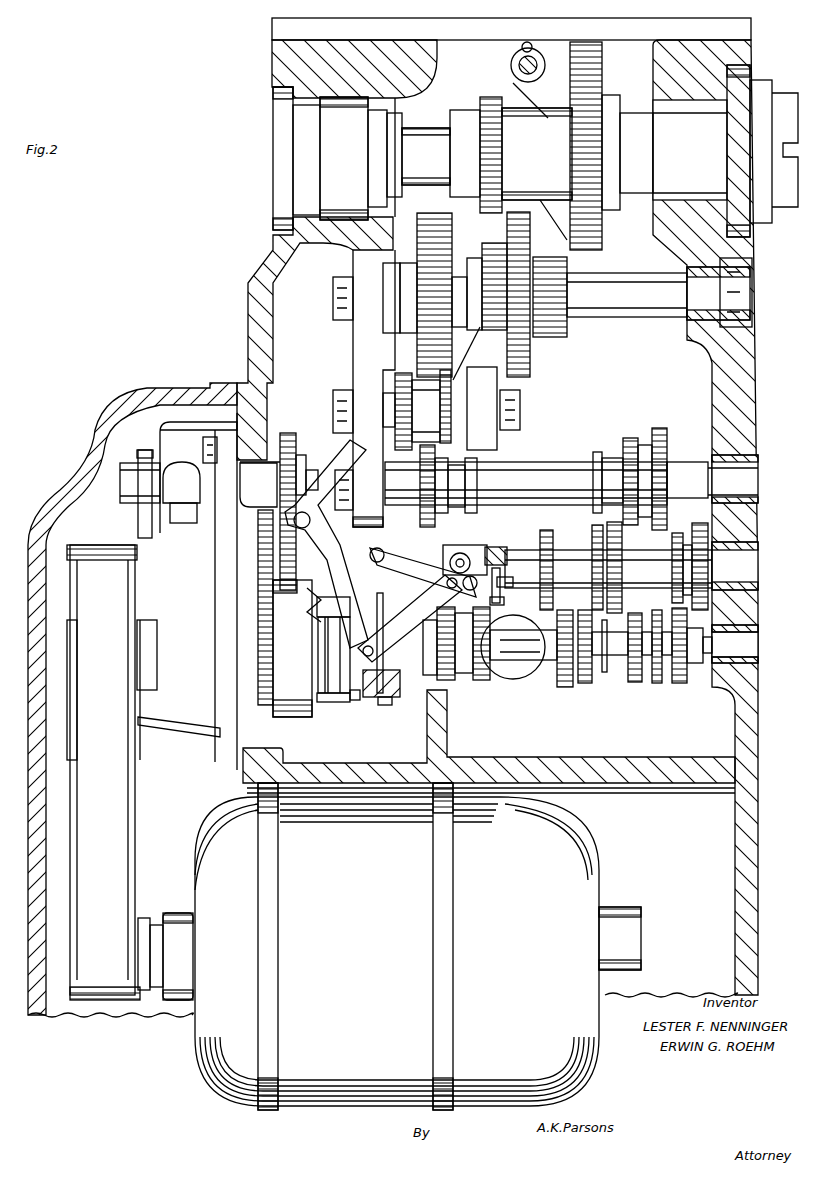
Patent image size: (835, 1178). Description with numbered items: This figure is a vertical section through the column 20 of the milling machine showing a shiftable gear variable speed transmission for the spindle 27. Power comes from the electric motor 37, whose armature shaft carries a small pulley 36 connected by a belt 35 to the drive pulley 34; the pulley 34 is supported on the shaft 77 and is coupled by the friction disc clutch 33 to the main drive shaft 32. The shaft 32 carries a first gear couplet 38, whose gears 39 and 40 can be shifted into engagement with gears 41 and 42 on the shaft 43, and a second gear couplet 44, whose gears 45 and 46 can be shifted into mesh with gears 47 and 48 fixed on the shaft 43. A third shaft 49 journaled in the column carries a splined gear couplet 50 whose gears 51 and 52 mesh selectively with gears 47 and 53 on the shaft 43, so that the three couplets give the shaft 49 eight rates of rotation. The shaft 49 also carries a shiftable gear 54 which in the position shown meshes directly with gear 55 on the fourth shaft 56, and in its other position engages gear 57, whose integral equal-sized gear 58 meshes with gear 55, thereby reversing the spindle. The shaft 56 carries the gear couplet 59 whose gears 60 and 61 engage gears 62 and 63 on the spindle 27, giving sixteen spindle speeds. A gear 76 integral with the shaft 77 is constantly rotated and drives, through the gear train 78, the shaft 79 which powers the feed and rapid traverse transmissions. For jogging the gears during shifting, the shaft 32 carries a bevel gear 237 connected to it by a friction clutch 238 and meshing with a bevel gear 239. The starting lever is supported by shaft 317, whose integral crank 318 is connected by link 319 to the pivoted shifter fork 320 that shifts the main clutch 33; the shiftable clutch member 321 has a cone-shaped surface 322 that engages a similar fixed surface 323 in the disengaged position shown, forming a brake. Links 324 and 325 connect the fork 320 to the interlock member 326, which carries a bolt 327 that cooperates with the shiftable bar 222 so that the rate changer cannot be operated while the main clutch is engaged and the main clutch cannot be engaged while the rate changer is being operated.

The gear housing 20 is at (260, 278).
The spindle 27 is at (757, 100).
The main drive shaft 32 is at (517, 658).
The friction disc clutch 33 is at (302, 690).
The drive pulley 34 is at (60, 548).
The belt 35 is at (123, 800).
The small pulley 36 is at (142, 922).
The electric motor 37 is at (560, 850).
The first gear couplet 38 is at (597, 672).
The gear 39 is at (567, 687).
The gear 40 is at (585, 683).
The gear 41 is at (547, 530).
The gear 42 is at (596, 525).
The shaft 43 is at (503, 545).
The second gear couplet 44 is at (657, 683).
The gear 45 is at (635, 682).
The gear 46 is at (682, 683).
The gear 47 is at (622, 608).
The gear 48 is at (700, 523).
The third shaft 49 is at (533, 470).
The gear couplet 50 is at (597, 452).
The gear 51 is at (633, 438).
The gear 52 is at (657, 428).
The gear 53 is at (672, 533).
The second shiftable gear 54 is at (477, 465).
The gear 55 is at (433, 200).
The fourth shaft 56 is at (622, 305).
The gear 57 is at (400, 372).
The gear 58 is at (453, 378).
The shiftable gear couplet 59 is at (478, 258).
The gear 60 is at (525, 356).
The gear 61 is at (560, 337).
The gear 62 is at (497, 78).
The gear 63 is at (585, 42).
The gear 76 is at (265, 708).
The shaft 77 is at (148, 677).
The gear train 78 is at (283, 437).
The shaft 79 is at (298, 463).
The shiftable bar 222 is at (487, 547).
The bevel gear 237 is at (480, 680).
The friction clutch 238 is at (453, 680).
The bevel gear 239 is at (517, 673).
The shaft 317 is at (512, 60).
The crank 318 is at (541, 42).
The link 319 is at (320, 473).
The pivoted shifter fork 320 is at (347, 543).
The shiftable member 321 is at (353, 700).
The cone-shaped surface 322 is at (373, 698).
The fixed surface 323 is at (380, 703).
The link 324 is at (387, 552).
The link 325 is at (417, 598).
The interlock member 326 is at (500, 590).
The bolt 327 is at (496, 605).